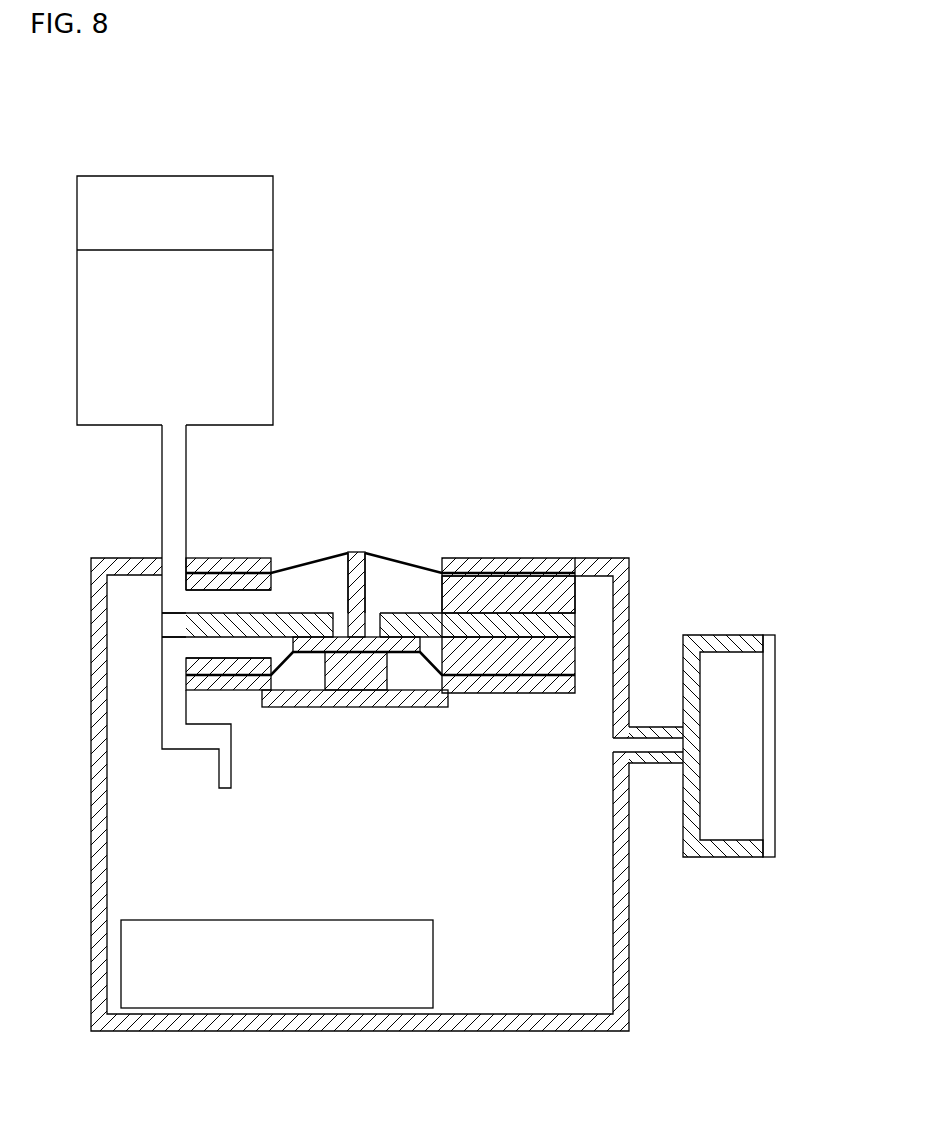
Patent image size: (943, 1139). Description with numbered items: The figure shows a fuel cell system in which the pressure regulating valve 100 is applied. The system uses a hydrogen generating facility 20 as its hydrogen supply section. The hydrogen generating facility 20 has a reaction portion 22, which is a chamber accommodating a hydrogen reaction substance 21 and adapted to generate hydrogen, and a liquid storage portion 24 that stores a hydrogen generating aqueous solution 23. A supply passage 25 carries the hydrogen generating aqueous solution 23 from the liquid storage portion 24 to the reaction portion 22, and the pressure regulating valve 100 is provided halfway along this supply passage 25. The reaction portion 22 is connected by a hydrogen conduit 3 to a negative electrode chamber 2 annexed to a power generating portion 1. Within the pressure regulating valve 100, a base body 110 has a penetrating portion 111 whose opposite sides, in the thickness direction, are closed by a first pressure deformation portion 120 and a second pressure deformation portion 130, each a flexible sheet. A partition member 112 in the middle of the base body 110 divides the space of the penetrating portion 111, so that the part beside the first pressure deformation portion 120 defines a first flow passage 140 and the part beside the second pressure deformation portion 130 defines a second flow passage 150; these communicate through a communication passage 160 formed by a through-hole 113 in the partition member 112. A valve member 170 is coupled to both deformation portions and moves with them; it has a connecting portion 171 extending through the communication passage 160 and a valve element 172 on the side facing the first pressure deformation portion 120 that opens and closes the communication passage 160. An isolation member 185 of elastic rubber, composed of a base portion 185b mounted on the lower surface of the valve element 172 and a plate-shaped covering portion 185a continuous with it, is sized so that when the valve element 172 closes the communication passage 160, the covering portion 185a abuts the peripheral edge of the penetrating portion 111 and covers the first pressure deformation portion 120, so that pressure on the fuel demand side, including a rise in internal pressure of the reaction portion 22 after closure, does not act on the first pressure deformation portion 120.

The power generating portion 1 is at (769, 642).
The negative electrode chamber 2 is at (736, 822).
The hydrogen conduit 3 is at (648, 727).
The hydrogen generating facility 20 is at (329, 732).
The hydrogen reaction substance 21 is at (222, 982).
The reaction portion 22 is at (97, 905).
The hydrogen generating aqueous solution 23 is at (231, 325).
The liquid storage portion 24 is at (110, 197).
The supply passage 25 is at (178, 500).
The pressure regulating valve 100 is at (392, 590).
The base body 110 is at (528, 563).
The penetrating portion 111 is at (438, 546).
The partition member 112 is at (437, 565).
The through-hole 113 is at (333, 568).
The first pressure deformation portion 120 is at (306, 698).
The second pressure deformation portion 130 is at (287, 560).
The first flow passage 140 is at (283, 696).
The second flow passage 150 is at (318, 565).
The communication passage 160 is at (397, 562).
The valve member 170 is at (375, 565).
The connecting portion 171 is at (417, 703).
The valve element 172 is at (358, 700).
The isolation member 185 is at (461, 711).
The covering portion 185a is at (293, 698).
The base portion 185b is at (343, 698).